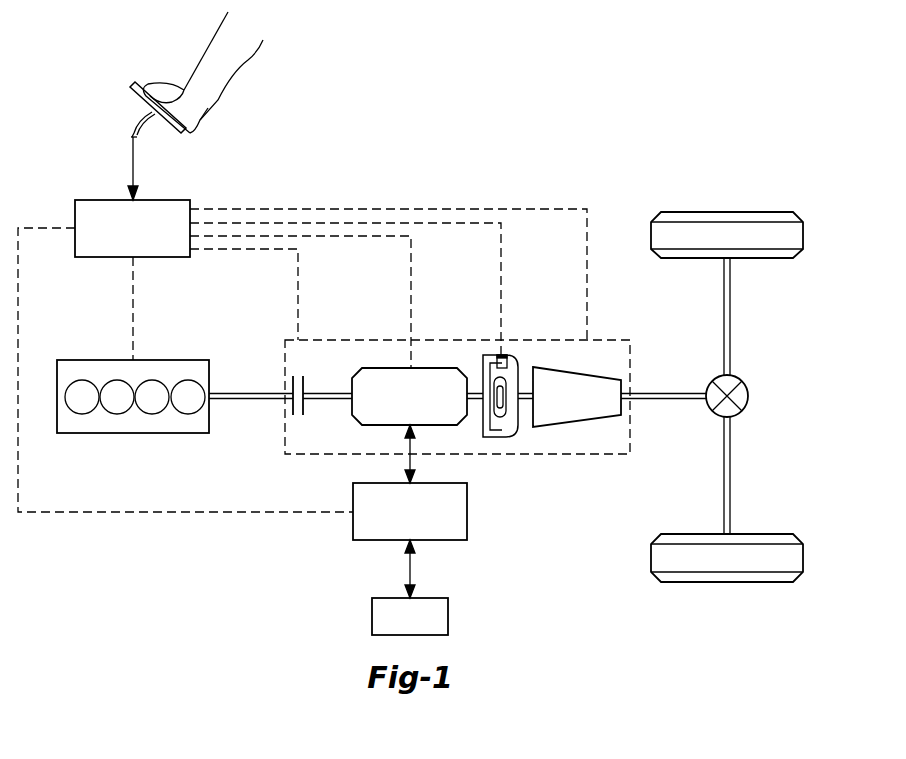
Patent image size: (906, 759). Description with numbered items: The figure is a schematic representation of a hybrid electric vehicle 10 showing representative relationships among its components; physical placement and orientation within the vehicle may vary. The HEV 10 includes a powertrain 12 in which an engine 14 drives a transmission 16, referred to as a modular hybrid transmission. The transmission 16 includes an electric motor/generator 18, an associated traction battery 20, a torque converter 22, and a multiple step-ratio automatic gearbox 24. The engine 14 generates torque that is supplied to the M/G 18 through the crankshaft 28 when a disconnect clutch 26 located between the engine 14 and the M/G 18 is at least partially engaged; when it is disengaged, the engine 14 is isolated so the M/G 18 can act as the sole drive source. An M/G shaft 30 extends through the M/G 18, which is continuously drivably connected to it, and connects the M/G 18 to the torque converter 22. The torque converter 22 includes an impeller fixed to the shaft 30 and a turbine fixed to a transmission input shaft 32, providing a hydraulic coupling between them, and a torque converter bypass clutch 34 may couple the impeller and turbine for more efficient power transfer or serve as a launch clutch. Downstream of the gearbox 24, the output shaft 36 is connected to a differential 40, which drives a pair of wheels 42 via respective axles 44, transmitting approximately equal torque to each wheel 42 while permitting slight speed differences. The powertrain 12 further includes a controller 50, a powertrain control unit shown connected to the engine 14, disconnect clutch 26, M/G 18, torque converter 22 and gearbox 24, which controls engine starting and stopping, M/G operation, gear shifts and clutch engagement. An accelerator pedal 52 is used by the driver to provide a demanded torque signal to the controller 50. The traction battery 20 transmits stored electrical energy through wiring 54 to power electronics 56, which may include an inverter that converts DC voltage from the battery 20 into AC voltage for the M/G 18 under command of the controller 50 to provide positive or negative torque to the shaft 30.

The hybrid electric vehicle 10 is at (606, 148).
The powertrain 12 is at (238, 550).
The engine 14 is at (70, 360).
The transmission 16 is at (447, 340).
The electric motor/generator 18 is at (388, 368).
The traction battery 20 is at (372, 617).
The torque converter 22 is at (497, 437).
The gearbox 24 is at (571, 427).
The disconnect clutch 26 is at (293, 415).
The crankshaft 28 is at (268, 393).
The M/G shaft 30 is at (332, 393).
The transmission input shaft 32 is at (520, 393).
The torque converter bypass clutch 34 is at (503, 355).
The output shaft 36 is at (676, 393).
The differential 40 is at (748, 396).
The wheels 42 is at (695, 212).
The axles 44 is at (730, 313).
The controller 50 is at (86, 200).
The accelerator pedal 52 is at (132, 95).
The wiring 54 is at (410, 568).
The power electronics 56 is at (467, 512).